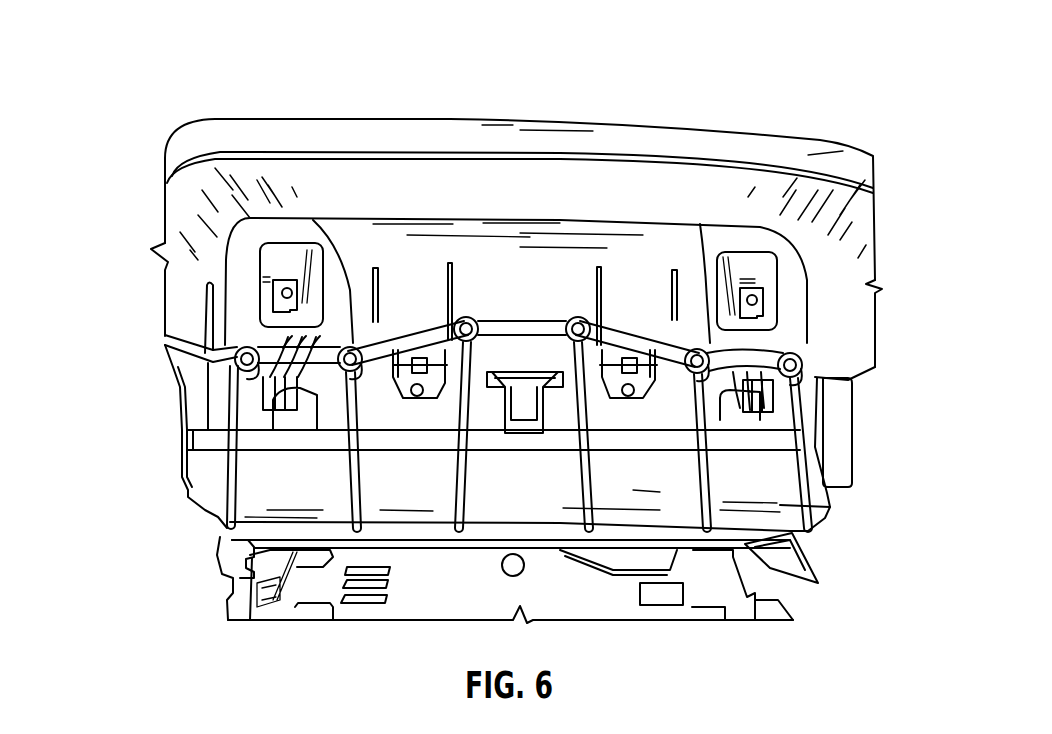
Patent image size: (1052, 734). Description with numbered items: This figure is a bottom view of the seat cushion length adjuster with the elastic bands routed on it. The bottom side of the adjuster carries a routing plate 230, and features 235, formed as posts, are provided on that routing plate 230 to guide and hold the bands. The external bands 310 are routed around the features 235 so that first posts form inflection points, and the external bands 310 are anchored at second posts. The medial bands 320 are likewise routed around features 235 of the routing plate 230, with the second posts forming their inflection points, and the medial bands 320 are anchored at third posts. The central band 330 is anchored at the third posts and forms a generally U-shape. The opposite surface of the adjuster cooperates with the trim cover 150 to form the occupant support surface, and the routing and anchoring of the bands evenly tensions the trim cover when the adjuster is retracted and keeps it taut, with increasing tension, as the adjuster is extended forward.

The trim cover 150 is at (423, 548).
The routing plate 230 is at (524, 328).
The features 235 is at (350, 345).
The external bands 310 is at (215, 446).
The medial bands 320 is at (350, 401).
The central band 330 is at (469, 403).